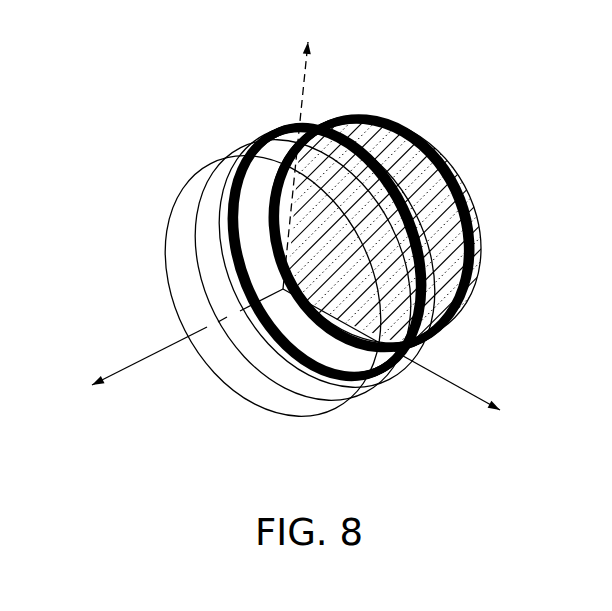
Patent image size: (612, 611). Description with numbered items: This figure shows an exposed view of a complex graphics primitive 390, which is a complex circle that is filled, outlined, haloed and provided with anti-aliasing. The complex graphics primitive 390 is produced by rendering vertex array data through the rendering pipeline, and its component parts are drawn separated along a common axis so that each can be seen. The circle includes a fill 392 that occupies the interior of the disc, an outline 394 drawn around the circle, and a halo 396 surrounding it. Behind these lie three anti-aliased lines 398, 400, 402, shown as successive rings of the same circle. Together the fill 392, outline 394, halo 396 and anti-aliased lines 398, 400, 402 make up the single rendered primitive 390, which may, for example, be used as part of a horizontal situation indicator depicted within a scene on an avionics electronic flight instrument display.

The complex graphics primitive 390 is at (145, 48).
The fill 392 is at (478, 212).
The outline 394 is at (338, 113).
The halo 396 is at (393, 378).
The anti-aliased line 398 is at (324, 382).
The anti-aliased line 400 is at (210, 178).
The anti-aliased line 402 is at (168, 230).